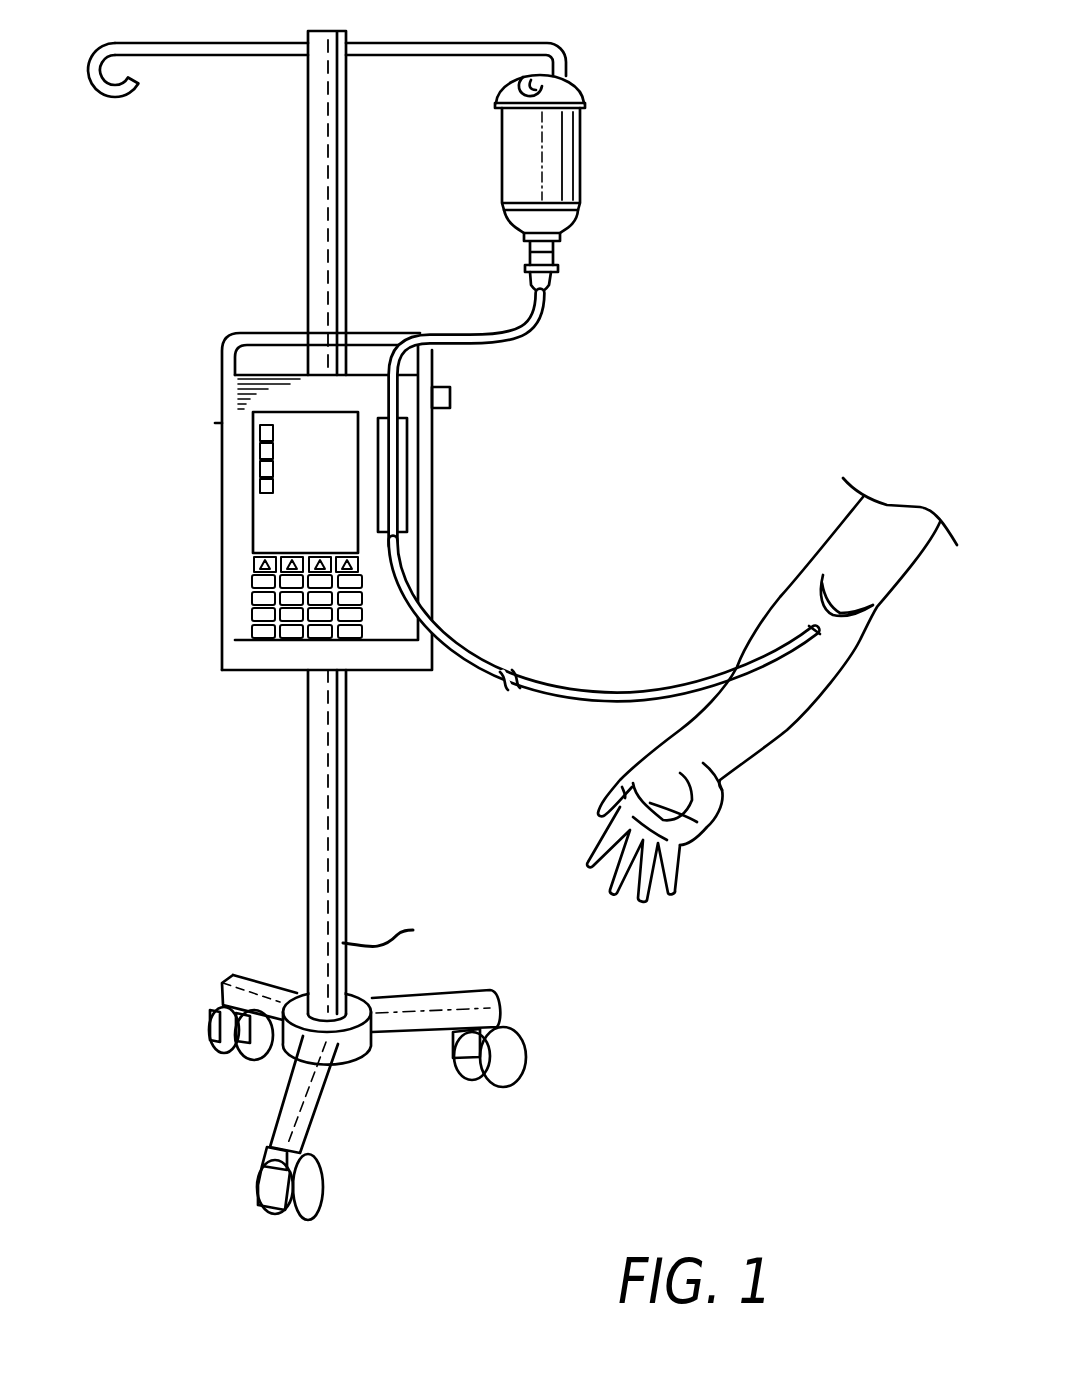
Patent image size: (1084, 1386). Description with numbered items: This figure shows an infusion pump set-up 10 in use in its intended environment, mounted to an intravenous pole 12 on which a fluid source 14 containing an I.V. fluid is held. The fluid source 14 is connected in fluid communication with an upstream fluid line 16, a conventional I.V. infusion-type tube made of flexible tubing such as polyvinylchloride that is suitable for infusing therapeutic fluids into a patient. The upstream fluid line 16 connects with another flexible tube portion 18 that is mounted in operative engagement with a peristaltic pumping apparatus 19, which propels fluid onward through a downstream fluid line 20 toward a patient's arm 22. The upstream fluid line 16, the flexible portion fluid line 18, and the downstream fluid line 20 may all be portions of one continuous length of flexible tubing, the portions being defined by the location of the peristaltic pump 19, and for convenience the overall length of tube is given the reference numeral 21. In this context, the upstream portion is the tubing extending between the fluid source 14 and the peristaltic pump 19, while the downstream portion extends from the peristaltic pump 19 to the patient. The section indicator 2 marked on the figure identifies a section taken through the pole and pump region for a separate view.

The section line 2- 2 is at (393, 330).
The infusion pump set-up 10 is at (450, 398).
The intravenous (I.V.) pole 12 is at (307, 157).
The fluid source 14 is at (498, 155).
The upstream fluid line 16 is at (482, 337).
The tube portion 18 is at (403, 520).
The peristaltic pumping apparatus 19 is at (432, 463).
The downstream fluid line 20 is at (567, 700).
The overall length of tube 21 is at (583, 311).
The patient's arm 22 is at (857, 547).